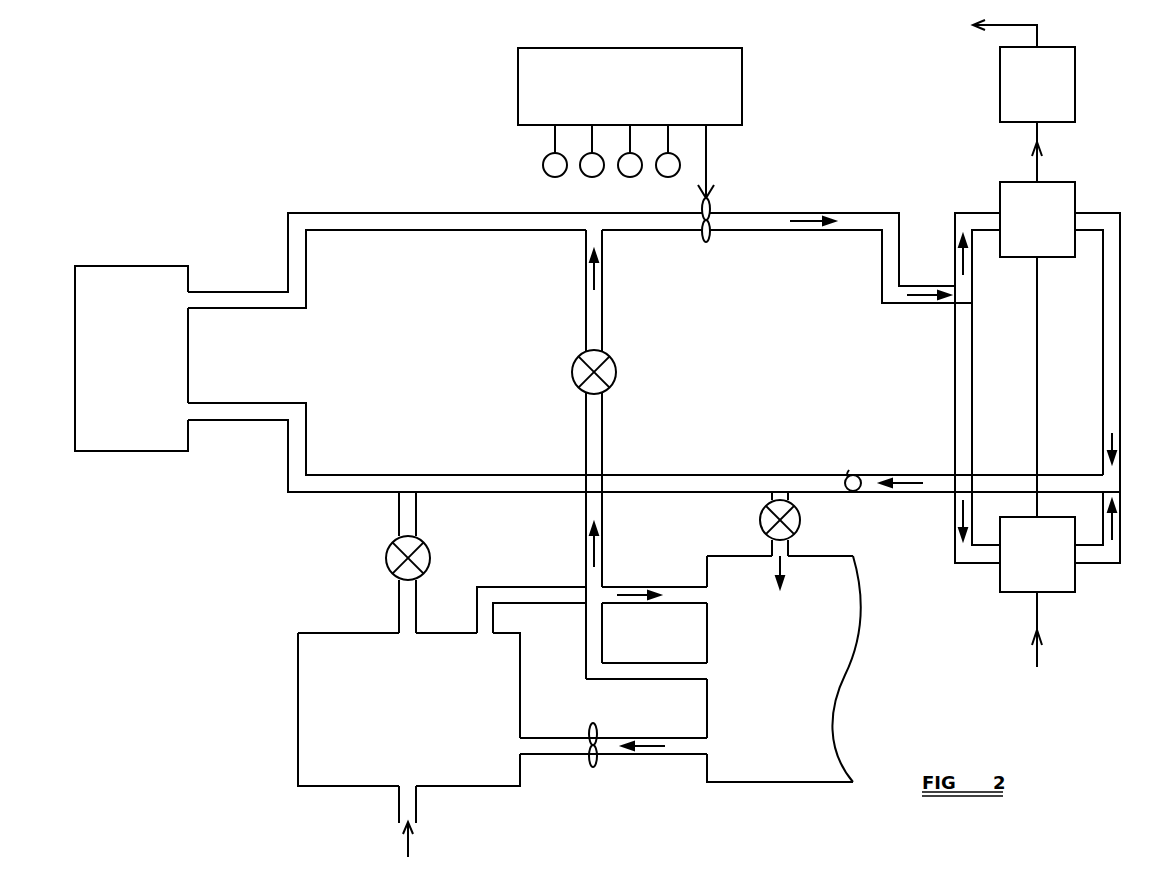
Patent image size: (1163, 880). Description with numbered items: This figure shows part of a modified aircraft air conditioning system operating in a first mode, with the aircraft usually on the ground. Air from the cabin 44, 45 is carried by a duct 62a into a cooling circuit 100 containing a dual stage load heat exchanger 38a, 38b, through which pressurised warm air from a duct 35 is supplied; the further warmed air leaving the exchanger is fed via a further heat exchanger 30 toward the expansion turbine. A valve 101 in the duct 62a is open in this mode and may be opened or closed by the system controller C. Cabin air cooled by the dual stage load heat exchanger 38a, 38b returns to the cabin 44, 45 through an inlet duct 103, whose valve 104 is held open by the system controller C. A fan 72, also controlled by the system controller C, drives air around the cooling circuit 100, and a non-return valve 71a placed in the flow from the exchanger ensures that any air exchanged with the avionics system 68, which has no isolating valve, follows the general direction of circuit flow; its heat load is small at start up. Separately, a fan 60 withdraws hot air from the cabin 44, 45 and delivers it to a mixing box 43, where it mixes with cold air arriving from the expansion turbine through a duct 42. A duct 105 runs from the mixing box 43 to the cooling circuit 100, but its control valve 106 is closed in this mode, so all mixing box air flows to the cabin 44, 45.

The system controller C is at (742, 88).
The cooling circuit 100 is at (787, 197).
The further heat exchanger 30 is at (1075, 92).
The dual stage load heat exchanger (first stage) 38a is at (1068, 198).
The dual stage load heat exchanger (second stage) 38b is at (1067, 575).
The duct 35 is at (1037, 657).
The fan 72 is at (712, 240).
The non-return valve 71a is at (848, 492).
The valve 101 is at (545, 166).
The valve 104 is at (580, 172).
The inlet duct 103 is at (772, 548).
The control valve 106 is at (628, 176).
The duct 105 is at (414, 518).
The fan 60 is at (672, 172).
The duct 62a is at (590, 430).
The avionics system 68 is at (97, 440).
The mixing box 43 is at (300, 698).
The duct 42 is at (400, 807).
The cabin 44 is at (789, 686).
The cabin 45 is at (795, 782).